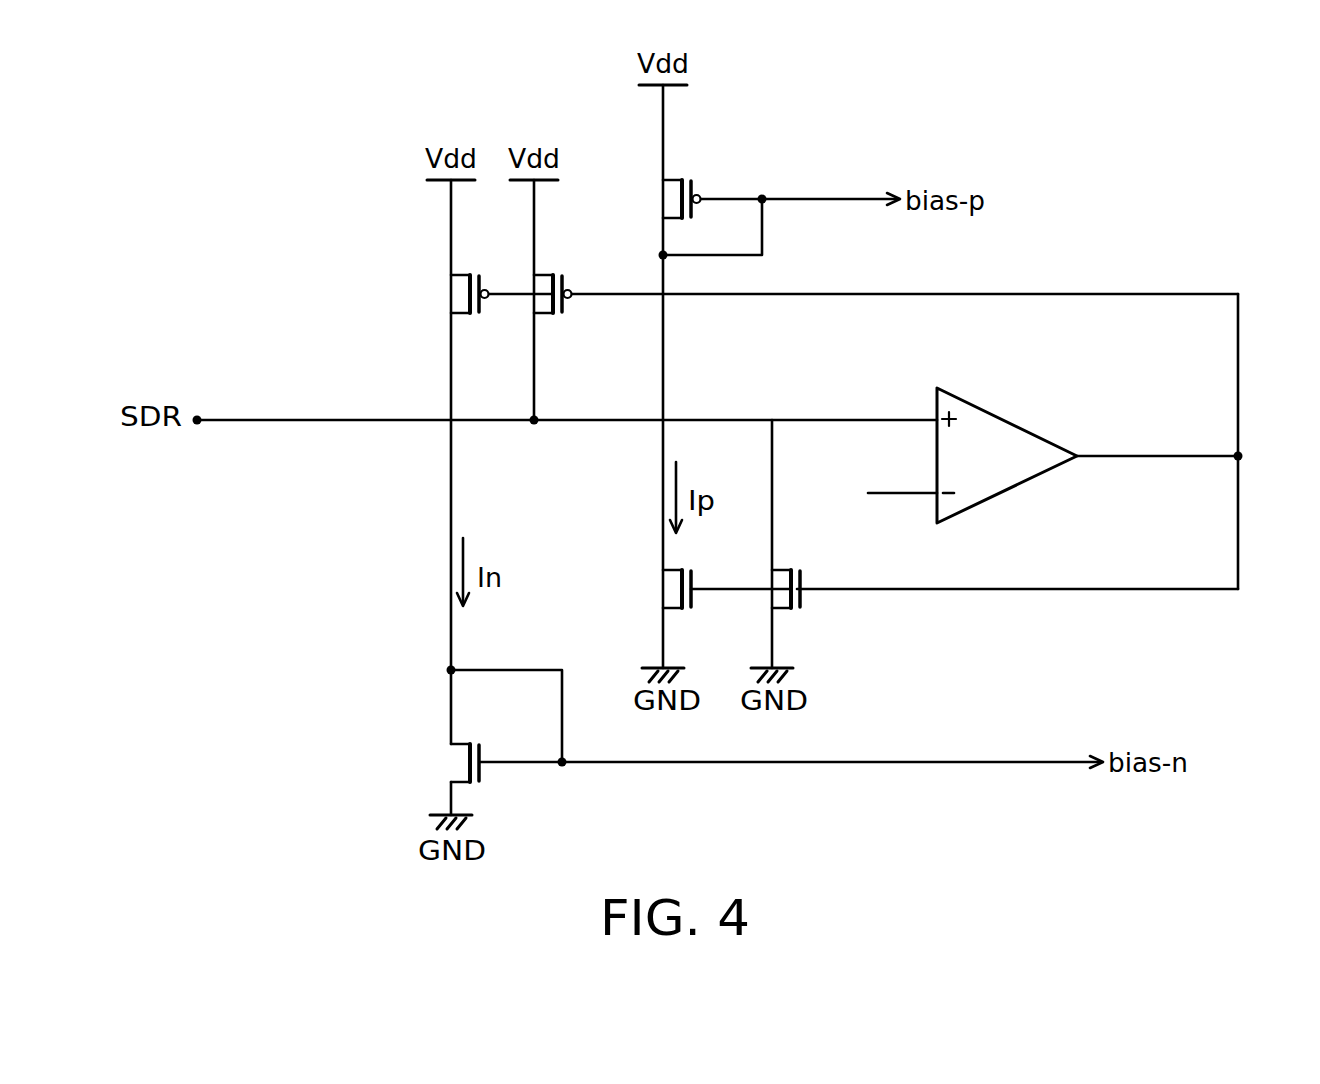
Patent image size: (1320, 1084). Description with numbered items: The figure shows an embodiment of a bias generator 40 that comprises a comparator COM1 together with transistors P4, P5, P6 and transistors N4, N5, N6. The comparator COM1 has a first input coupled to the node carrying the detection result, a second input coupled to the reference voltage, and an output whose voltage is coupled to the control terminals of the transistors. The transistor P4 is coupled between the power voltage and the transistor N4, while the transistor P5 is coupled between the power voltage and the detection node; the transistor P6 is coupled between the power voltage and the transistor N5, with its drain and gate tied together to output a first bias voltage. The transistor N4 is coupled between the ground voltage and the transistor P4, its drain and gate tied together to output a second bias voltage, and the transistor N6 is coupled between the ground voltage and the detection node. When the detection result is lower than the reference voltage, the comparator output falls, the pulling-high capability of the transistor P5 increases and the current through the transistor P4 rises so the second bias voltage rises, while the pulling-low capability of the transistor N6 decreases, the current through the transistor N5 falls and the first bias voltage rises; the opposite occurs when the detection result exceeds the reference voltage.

The bias generator 40 is at (248, 147).
The transistor P4 is at (451, 294).
The transistor P5 is at (568, 282).
The transistor P6 is at (664, 199).
The transistor N4 is at (444, 763).
The transistor N5 is at (656, 589).
The transistor N6 is at (810, 579).
The comparator COM1 is at (1006, 418).